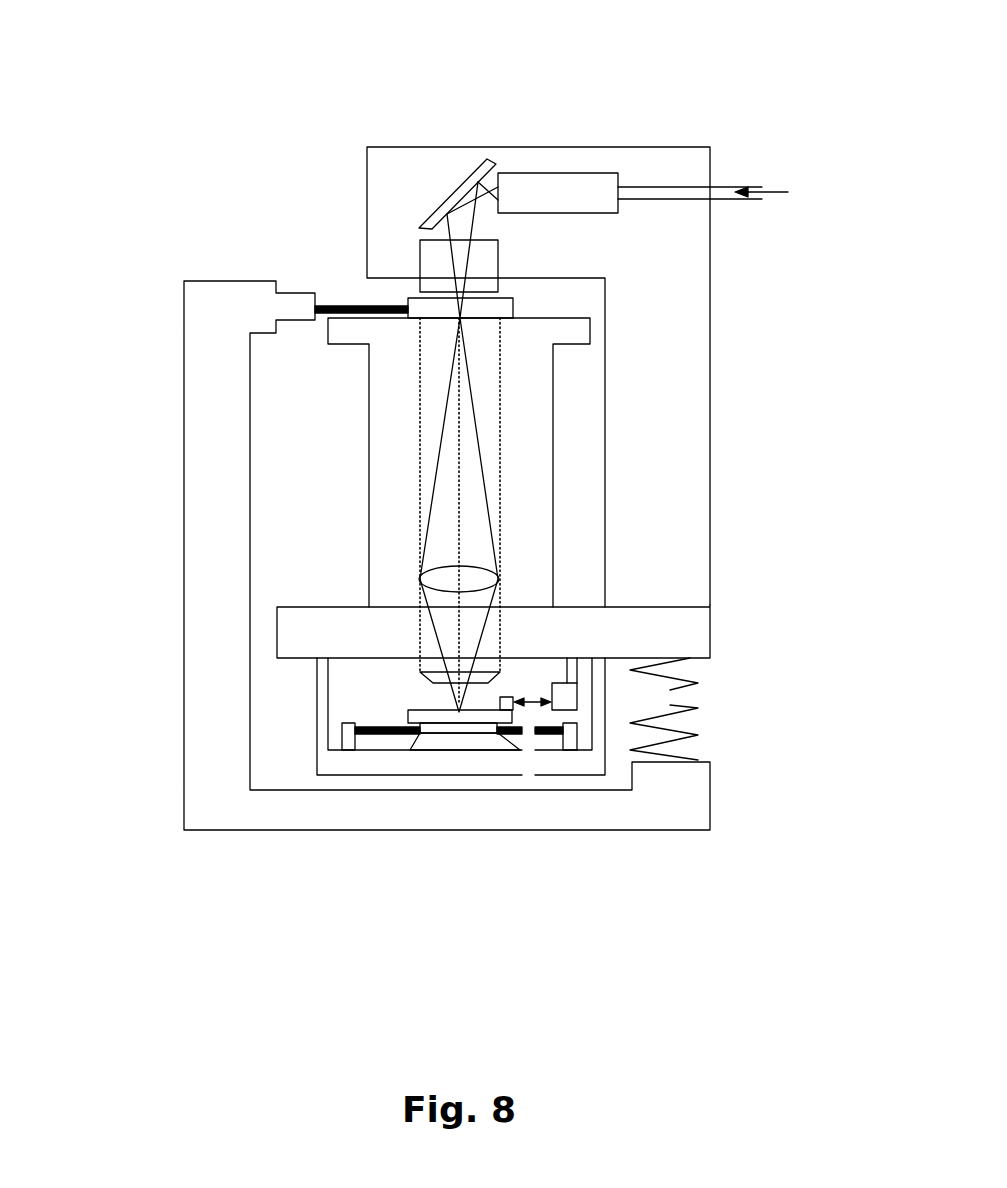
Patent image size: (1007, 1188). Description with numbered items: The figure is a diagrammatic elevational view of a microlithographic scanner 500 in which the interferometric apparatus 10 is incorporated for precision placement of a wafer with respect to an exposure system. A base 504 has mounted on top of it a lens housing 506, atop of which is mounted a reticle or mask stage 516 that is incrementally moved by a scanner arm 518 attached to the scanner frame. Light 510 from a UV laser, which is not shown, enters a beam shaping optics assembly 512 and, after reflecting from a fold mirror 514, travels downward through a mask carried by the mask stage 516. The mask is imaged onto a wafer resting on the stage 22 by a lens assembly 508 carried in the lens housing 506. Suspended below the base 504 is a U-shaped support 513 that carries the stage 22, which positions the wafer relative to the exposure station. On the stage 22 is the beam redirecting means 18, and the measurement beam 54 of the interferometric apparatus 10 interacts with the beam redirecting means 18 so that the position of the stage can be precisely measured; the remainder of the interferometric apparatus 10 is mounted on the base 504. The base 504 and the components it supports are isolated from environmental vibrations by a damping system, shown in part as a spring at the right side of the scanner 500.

The microlithographic scanner 500 is at (570, 80).
The beam shaping optics assembly 512 is at (605, 173).
The input beam 510 is at (743, 187).
The fold mirror 514 is at (453, 187).
The mask stage 516 is at (405, 300).
The scanner arm 518 is at (353, 303).
The lens housing 506 is at (553, 397).
The lens assembly 508 is at (500, 435).
The base 504 is at (712, 614).
The U-shaped support 513 is at (368, 778).
The stage 22 is at (408, 710).
The interferometric apparatus 10 is at (580, 697).
The beam redirecting means 18 is at (513, 697).
The measurement beam 54 is at (528, 710).